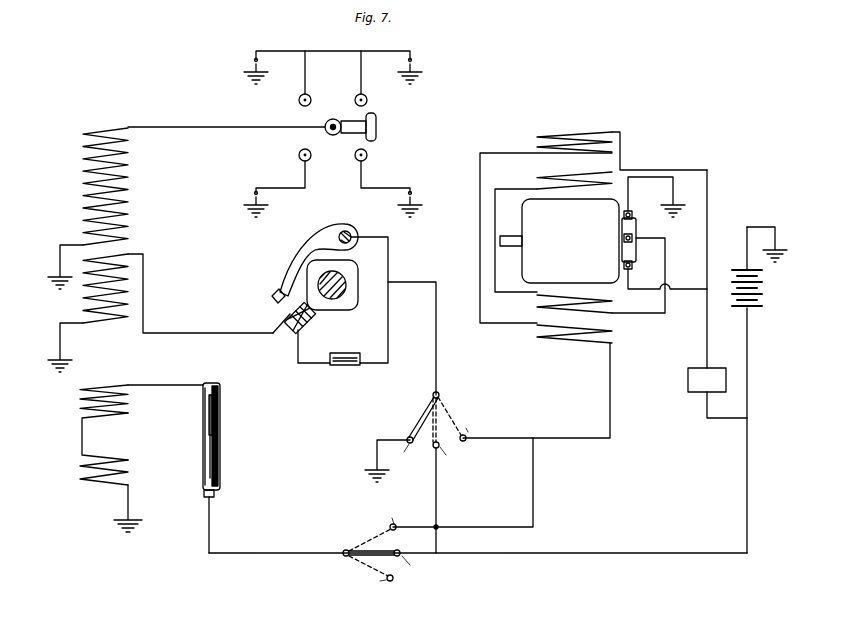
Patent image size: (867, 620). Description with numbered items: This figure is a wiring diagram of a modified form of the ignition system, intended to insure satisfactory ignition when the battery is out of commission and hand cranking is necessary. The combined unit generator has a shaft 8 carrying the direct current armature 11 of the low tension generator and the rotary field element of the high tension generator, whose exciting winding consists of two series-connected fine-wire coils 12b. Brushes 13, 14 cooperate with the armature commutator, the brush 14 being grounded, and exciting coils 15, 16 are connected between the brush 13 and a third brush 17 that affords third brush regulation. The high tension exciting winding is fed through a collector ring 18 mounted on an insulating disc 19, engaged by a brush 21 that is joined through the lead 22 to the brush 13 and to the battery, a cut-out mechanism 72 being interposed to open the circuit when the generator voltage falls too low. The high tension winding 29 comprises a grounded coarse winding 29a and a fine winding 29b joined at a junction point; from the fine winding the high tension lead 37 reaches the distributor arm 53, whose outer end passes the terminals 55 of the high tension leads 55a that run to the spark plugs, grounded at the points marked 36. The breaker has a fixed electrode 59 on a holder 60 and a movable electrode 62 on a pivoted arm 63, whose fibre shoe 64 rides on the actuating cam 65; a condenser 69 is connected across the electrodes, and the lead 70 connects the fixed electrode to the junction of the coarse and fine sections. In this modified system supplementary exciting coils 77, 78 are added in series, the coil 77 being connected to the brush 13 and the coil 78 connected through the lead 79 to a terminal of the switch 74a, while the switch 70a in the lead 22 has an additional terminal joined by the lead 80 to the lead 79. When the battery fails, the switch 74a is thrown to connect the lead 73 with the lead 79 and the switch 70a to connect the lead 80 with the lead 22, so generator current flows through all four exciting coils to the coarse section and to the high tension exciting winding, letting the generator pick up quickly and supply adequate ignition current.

The shaft 8 is at (512, 247).
The direct current armature 11 is at (582, 226).
The exciting coils 12b is at (129, 456).
The brush 13 is at (634, 267).
The brush 14 is at (633, 211).
The exciting coil 15 is at (534, 177).
The exciting coil 16 is at (534, 303).
The third brush 17 is at (636, 238).
The collector ring 18 is at (218, 385).
The disc 19 is at (221, 407).
The brush 21 is at (216, 493).
The lead 22 is at (633, 553).
The high tension winding 29 is at (102, 250).
The coarse winding 29a is at (80, 300).
The fine winding 29b is at (82, 200).
The ground connection 36 is at (252, 60).
The high tension lead 37 is at (226, 127).
The distributor arm 53 is at (378, 127).
The terminals 55 is at (354, 99).
The high tension leads 55a is at (362, 50).
The fixed electrode 59 is at (286, 312).
The holder 60 is at (298, 328).
The movable electrode 62 is at (272, 298).
The arm 63 is at (292, 262).
The fibre shoe 64 is at (318, 248).
The actuating cam 65 is at (358, 284).
The condenser 69 is at (355, 366).
The lead 70 is at (188, 334).
The ignition switch 70a is at (344, 558).
The cut-out mechanism 72 is at (688, 383).
The lead 73 is at (403, 286).
The switch 74a is at (430, 398).
The exciting coil 77 is at (570, 136).
The exciting coil 78 is at (576, 345).
The lead 79 is at (570, 440).
The lead 80 is at (533, 502).